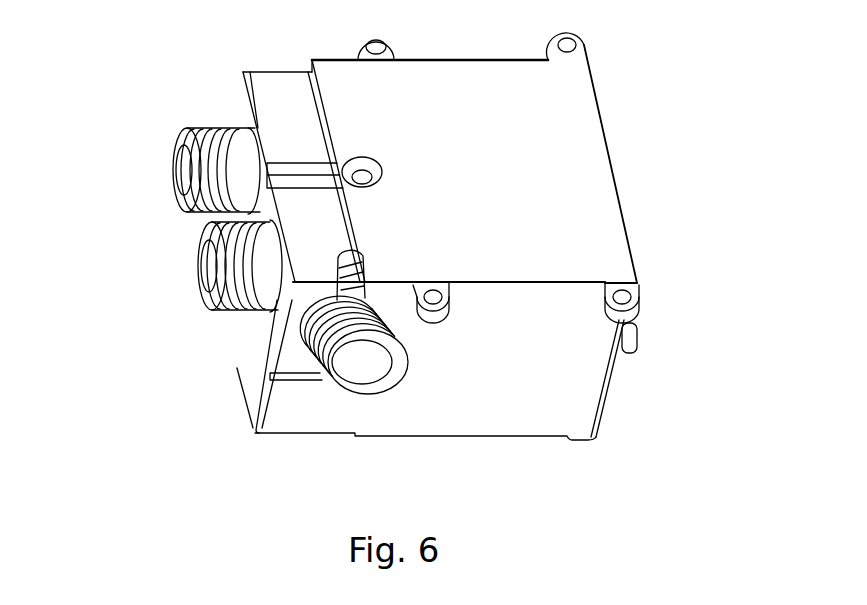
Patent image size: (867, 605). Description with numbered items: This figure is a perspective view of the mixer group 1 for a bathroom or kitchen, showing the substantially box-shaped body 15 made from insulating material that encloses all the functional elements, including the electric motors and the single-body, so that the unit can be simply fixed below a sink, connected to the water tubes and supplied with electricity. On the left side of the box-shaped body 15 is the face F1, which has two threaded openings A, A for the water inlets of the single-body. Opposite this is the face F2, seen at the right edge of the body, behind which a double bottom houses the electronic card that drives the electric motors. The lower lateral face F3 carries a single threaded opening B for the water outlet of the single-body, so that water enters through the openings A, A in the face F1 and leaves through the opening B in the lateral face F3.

The mixer group 1 is at (402, 237).
The box-shaped body 15 is at (539, 155).
The face F1 is at (248, 122).
The opposite face F2 is at (636, 268).
The lateral face F3 is at (567, 375).
The opening A is at (252, 135).
The opening B is at (312, 348).